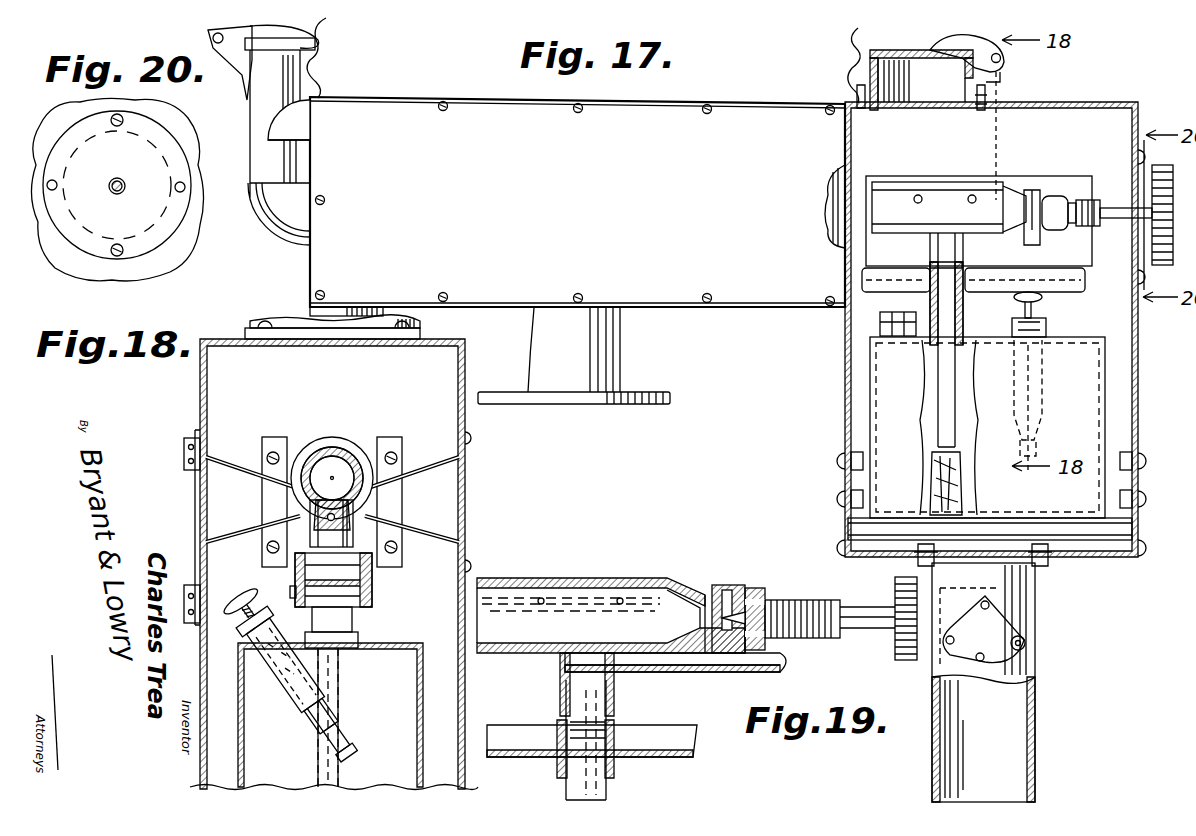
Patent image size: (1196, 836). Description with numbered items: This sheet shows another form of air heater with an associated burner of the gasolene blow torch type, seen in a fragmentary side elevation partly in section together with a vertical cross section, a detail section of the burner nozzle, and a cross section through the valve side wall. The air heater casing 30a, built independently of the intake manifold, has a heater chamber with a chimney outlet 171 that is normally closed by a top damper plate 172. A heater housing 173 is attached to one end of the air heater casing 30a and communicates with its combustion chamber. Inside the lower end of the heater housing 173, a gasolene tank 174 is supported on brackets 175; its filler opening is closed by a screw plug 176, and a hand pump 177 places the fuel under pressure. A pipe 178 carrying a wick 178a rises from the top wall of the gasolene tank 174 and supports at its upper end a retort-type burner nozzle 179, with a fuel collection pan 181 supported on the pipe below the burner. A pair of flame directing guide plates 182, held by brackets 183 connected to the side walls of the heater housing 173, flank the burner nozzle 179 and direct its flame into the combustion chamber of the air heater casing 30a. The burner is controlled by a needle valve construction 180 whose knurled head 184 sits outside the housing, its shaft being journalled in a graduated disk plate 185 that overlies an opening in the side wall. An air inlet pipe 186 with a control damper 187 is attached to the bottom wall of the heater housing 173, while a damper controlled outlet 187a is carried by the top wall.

In FIG. 17, the air heater casing 30a is at (764, 292).
In FIG. 18, the air heater casing 30a is at (466, 494).
In FIG. 17, the chimney outlet 171 is at (262, 163).
In FIG. 17, the top damper plate 172 is at (328, 20).
In FIG. 17, the heater housing 173 is at (1135, 388).
In FIG. 20, the heater housing 173 is at (73, 258).
In FIG. 17, the gasolene tank 174 is at (1090, 415).
In FIG. 18, the gasolene tank 174 is at (410, 776).
In FIG. 17, the brackets 175 is at (1112, 526).
In FIG. 17, the screw plug 176 is at (880, 325).
In FIG. 17, the hand pump 177 is at (1048, 328).
In FIG. 18, the hand pump 177 is at (300, 690).
In FIG. 17, the pipe 178 is at (945, 383).
In FIG. 18, the pipe 178 is at (340, 692).
In FIG. 19, the pipe 178 is at (610, 788).
In FIG. 17, the wick 178a is at (945, 482).
In FIG. 17, the burner nozzle 179 is at (935, 195).
In FIG. 18, the burner nozzle 179 is at (333, 460).
In FIG. 19, the burner nozzle 179 is at (603, 577).
In FIG. 17, the needle valve construction 180 is at (1120, 228).
In FIG. 19, the needle valve construction 180 is at (748, 612).
In FIG. 17, the fuel collection pan 181 is at (850, 282).
In FIG. 18, the fuel collection pan 181 is at (372, 590).
In FIG. 19, the fuel collection pan 181 is at (655, 736).
In FIG. 17, the flame directing guide plates 182 is at (1030, 185).
In FIG. 18, the flame directing guide plates 182 is at (300, 442).
In FIG. 18, the brackets 183 is at (232, 465).
In FIG. 17, the knurled head 184 is at (1178, 178).
In FIG. 19, the knurled head 184 is at (895, 647).
In FIG. 17, the graduated disk plate 185 is at (1130, 192).
In FIG. 20, the graduated disk plate 185 is at (140, 220).
In FIG. 19, the air inlet pipe 186 is at (1036, 688).
In FIG. 19, the control damper 187 is at (1036, 590).
In FIG. 17, the damper controlled outlet 187a is at (992, 80).